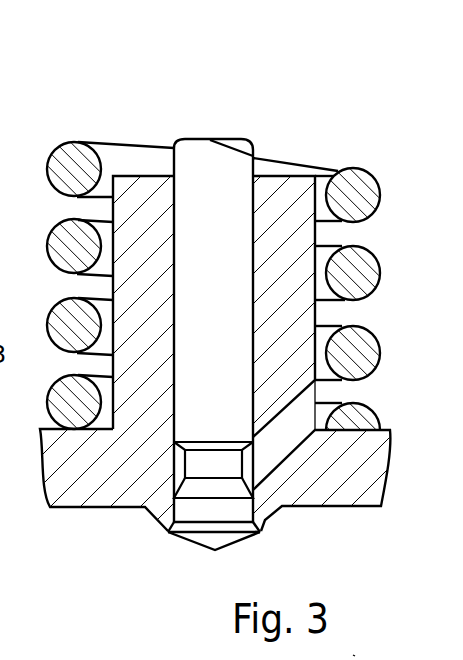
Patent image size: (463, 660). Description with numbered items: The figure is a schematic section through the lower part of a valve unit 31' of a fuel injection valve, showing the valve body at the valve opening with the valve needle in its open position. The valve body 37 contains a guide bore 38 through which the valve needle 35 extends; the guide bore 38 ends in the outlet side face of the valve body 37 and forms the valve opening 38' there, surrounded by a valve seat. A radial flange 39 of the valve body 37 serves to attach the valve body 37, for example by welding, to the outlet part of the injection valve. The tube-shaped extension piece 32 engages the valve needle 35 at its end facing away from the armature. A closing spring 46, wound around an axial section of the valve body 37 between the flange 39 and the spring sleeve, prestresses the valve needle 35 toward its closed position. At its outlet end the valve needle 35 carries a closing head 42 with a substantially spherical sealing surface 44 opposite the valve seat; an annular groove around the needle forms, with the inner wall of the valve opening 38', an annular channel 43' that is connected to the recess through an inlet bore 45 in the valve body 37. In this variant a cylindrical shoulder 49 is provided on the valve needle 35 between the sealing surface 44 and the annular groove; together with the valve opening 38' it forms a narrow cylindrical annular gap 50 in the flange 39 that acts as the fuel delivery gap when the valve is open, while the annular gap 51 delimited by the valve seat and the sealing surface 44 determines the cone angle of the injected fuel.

The valve unit 31' is at (231, 330).
The tube-shaped extension piece 32 is at (365, 649).
The valve needle 35 is at (196, 197).
The valve body 37 is at (137, 222).
The guide bore 38 is at (224, 239).
The valve opening 38' is at (129, 584).
The radial flange 39 is at (67, 470).
The closing head 42 is at (201, 528).
The annular channel 43' is at (116, 519).
The sealing surface 44 is at (262, 532).
The inlet bore 45 is at (290, 418).
The closing spring 46 is at (359, 185).
The cylindrical shoulder 49 is at (200, 508).
The annular gap 50 is at (268, 522).
The annular gap 51 is at (167, 530).